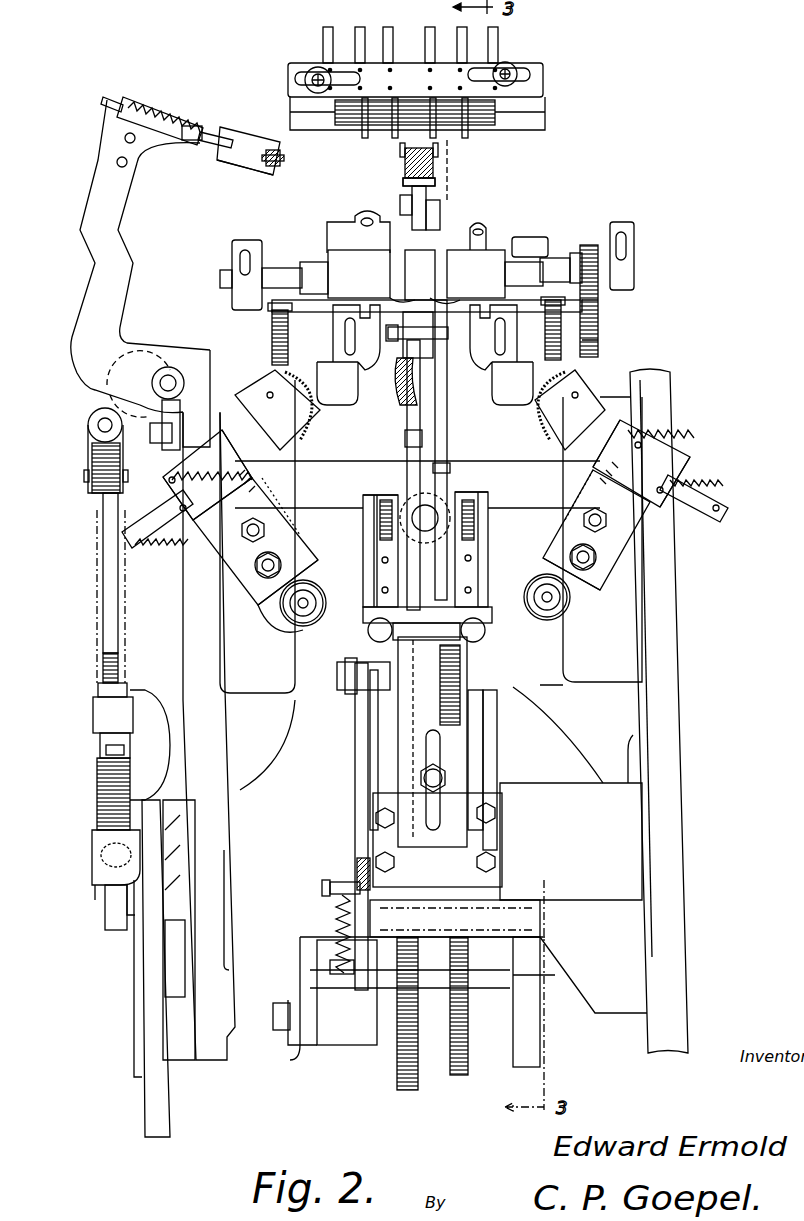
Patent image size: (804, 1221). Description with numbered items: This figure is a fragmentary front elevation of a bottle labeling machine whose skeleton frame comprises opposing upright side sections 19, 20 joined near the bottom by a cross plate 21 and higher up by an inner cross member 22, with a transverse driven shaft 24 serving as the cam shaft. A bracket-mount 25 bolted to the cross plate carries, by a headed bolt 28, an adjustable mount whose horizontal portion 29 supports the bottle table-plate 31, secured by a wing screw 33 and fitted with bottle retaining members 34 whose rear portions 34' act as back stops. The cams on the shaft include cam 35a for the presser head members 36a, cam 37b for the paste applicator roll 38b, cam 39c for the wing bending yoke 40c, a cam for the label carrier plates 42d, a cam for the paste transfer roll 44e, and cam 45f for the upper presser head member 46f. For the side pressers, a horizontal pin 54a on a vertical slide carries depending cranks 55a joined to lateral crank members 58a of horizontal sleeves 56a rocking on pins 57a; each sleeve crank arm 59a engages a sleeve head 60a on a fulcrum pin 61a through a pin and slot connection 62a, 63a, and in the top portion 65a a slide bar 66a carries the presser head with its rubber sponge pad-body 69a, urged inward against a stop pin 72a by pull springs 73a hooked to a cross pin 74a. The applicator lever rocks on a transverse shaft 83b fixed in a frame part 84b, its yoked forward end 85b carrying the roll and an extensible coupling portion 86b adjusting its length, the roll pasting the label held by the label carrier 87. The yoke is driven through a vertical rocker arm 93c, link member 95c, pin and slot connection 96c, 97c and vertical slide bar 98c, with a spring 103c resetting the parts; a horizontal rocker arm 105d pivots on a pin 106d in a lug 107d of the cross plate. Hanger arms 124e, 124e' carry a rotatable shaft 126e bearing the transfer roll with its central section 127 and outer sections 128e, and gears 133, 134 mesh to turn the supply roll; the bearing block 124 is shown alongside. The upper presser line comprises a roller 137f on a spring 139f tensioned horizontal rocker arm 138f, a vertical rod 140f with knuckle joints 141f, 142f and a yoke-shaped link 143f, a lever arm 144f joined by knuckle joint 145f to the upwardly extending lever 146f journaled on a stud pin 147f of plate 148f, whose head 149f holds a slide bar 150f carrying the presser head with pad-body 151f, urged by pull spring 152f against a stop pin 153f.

The upright side section 19 is at (685, 830).
The upright side section 20 is at (207, 1050).
The cross plate 21 is at (540, 800).
The inner cross member 22 is at (355, 692).
The driven shaft 24 is at (553, 985).
The bracket-mount 25 is at (500, 860).
The headed bolt 28 is at (445, 773).
The horizontal portion of table-plate bracket-mount 29 is at (462, 668).
The bottle supporting table-plate 31 is at (485, 638).
The wing screw 33 is at (480, 700).
The bottle retaining member 34 is at (428, 561).
The rear portion of bottle retaining member 34' is at (429, 480).
The cam 35a is at (530, 1052).
The presser head member 36a is at (298, 418).
The cam 37b is at (468, 1072).
The paste applicator roll 38b is at (410, 152).
The cam 39c is at (410, 1090).
The label wing bending yoke 40c is at (398, 372).
The label carrier plate 42d is at (330, 342).
The paste transfer roll 44e is at (485, 265).
The cam 45f is at (148, 1020).
The upper presser head member 46f is at (250, 160).
The horizontal pin 54a is at (448, 470).
The depending crank 55a is at (420, 560).
The horizontal sleeve 56a is at (298, 652).
The pin 57a is at (305, 585).
The lateral crank member 58a is at (528, 592).
The crank arm 59a is at (298, 622).
The sleeve head 60a is at (240, 565).
The fulcrum pin 61a is at (262, 515).
The pin of pin and slot connection 62a is at (275, 580).
The slot of pin and slot connection 63a is at (285, 550).
The top portion of sleeve head member 65a is at (238, 445).
The slide bar 66a is at (195, 520).
The pad-body medium 69a is at (285, 378).
The stop pin 72a is at (142, 520).
The pull spring 73a is at (180, 520).
The cross pin 74a is at (130, 540).
The transverse shaft 83b is at (530, 252).
The frame part 84b is at (340, 235).
The yoked forward end of lever arm 85b is at (440, 158).
The extensible coupling portion 86b is at (425, 230).
The label carrier 87 is at (535, 75).
The vertical rocker arm 93c is at (372, 722).
The link member 95c is at (357, 768).
The pin of pin and slot connection 96c is at (322, 888).
The slot of pin and slot connection 97c is at (357, 875).
The vertical slide bar 98c is at (470, 912).
The spring 103c is at (330, 935).
The horizontal rocker arm 105d is at (370, 1040).
The pin 106d is at (288, 1025).
The lug 107d is at (300, 1050).
The bearing block 124 is at (632, 228).
The hanger arm 124e is at (436, 266).
The complemental hanger arm 124e' is at (236, 282).
The rotatable shaft 126e is at (553, 262).
The central section 127 is at (423, 262).
The outer section 128e is at (425, 302).
The gear 133 is at (597, 248).
The gear 134 is at (592, 330).
The roller 137f is at (130, 900).
The horizontal rocker arm 138f is at (177, 838).
The spring 139f is at (100, 745).
The vertical rod 140f is at (108, 533).
The knuckle joint 141f is at (100, 870).
The knuckle joint 142f is at (97, 808).
The yoke-shaped link 143f is at (105, 718).
The lever arm 144f is at (92, 415).
The knuckle joint 145f is at (92, 468).
The upwardly extending lever 146f is at (95, 195).
The stud pin 147f is at (170, 375).
The plate 148f is at (130, 355).
The head 149f is at (190, 130).
The slide bar 150f is at (222, 130).
The pad-body medium 151f is at (283, 158).
The pull spring 152f is at (145, 112).
The stop pin 153f is at (110, 98).